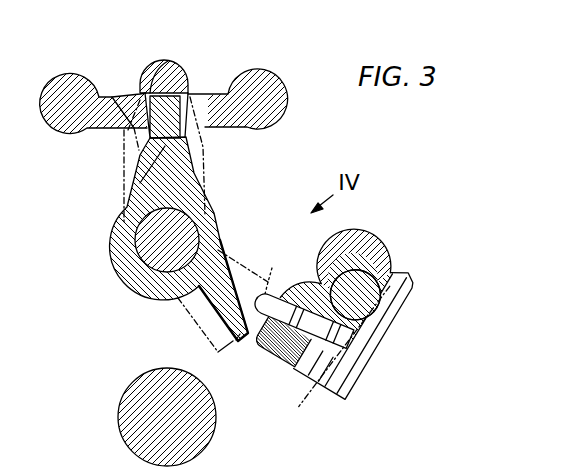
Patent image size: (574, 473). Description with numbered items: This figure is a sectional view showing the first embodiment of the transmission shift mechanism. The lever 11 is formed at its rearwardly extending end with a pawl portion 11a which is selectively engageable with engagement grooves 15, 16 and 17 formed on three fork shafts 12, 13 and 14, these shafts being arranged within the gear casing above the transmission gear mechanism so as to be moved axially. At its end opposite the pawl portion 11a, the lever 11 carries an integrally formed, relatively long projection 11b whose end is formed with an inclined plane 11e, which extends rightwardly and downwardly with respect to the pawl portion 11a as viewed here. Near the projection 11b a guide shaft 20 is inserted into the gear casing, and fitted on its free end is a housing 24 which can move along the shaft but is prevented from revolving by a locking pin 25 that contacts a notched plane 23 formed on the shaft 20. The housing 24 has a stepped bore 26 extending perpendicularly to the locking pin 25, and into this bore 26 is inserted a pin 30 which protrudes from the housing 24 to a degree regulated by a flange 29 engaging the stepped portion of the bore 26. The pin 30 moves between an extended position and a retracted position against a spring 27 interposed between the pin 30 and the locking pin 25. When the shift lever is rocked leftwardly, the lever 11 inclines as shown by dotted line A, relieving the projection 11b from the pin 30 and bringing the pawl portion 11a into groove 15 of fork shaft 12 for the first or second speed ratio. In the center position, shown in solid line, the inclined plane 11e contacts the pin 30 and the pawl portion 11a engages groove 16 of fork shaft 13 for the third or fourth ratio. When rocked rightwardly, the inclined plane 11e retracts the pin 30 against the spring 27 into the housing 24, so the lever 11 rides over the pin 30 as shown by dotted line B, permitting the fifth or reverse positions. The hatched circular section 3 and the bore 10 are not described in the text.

The ball 3 is at (216, 421).
The pivot bore 10 is at (130, 266).
The lever 11 is at (215, 215).
The pawl portion 11a is at (123, 153).
The projection 11b is at (262, 272).
The inclined plane 11e is at (236, 342).
The fork shaft 12 is at (254, 70).
The fork shaft 13 is at (166, 63).
The fork shaft 14 is at (68, 78).
The engagement groove 15 is at (207, 95).
The engagement groove 16 is at (148, 73).
The engagement groove 17 is at (124, 97).
The guide shaft 20 is at (350, 273).
The notched plane 23 is at (387, 320).
The housing 24 is at (380, 267).
The locking pin 25 is at (337, 388).
The stepped bore 26 is at (360, 378).
The spring 27 is at (333, 349).
The flange 29 is at (293, 357).
The pin 30 is at (280, 290).
The dotted line A is at (205, 326).
The dotted line B is at (272, 268).